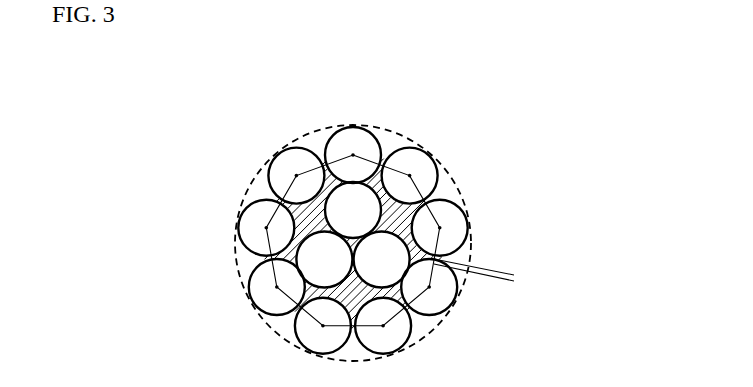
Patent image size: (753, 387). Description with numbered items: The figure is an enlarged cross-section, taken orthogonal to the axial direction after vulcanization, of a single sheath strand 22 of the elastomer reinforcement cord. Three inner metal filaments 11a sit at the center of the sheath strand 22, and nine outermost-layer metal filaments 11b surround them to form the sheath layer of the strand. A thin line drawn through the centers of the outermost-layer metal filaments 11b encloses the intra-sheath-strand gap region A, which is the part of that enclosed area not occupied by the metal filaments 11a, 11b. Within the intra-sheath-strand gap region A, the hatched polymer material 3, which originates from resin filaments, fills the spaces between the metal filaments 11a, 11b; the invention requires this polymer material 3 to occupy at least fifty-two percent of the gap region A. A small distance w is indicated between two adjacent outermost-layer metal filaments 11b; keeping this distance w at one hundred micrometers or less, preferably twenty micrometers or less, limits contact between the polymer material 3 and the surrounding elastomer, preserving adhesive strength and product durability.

The sheath strand 22 is at (547, 155).
The polymer material 3 is at (422, 203).
The metal filament 11a is at (381, 167).
The metal filament 11b is at (407, 347).
The intra-sheath-strand gap region A is at (323, 165).
The distance w is at (513, 232).